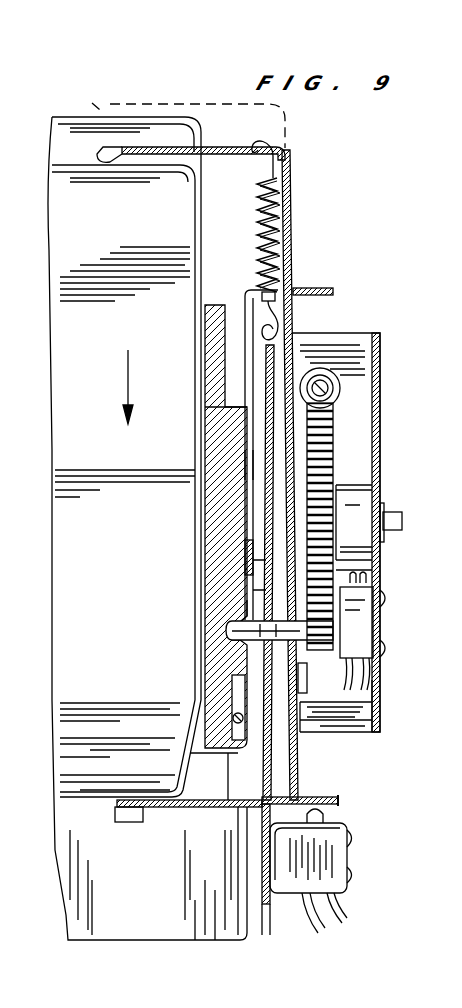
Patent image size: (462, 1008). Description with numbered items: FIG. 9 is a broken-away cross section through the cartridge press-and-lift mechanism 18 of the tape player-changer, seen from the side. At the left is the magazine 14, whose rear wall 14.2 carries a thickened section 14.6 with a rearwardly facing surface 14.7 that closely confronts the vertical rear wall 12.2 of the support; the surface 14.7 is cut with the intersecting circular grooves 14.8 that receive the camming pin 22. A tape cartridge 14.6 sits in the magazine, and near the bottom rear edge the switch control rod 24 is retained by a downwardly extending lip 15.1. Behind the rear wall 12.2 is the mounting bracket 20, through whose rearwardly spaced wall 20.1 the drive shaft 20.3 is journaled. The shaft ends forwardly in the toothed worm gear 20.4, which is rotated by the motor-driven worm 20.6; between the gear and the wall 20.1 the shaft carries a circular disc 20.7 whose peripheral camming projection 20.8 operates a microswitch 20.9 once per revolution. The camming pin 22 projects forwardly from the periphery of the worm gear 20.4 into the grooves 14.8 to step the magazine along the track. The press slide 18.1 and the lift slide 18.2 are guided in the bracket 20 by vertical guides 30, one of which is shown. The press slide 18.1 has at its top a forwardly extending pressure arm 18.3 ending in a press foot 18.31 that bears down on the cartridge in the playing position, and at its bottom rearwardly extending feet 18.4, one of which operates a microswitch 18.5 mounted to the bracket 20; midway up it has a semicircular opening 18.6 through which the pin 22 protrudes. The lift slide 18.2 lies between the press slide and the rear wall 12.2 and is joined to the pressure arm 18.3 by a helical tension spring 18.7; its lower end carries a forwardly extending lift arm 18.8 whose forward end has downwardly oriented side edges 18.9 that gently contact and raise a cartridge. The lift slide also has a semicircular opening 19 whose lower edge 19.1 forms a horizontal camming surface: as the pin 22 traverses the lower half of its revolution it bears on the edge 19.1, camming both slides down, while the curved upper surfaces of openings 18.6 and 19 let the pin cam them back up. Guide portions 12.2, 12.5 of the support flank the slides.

The rear wall 12.2 is at (245, 343).
The guide bracket lower portion 12.5 is at (250, 465).
The magazine 14 is at (227, 632).
The rear wall 14.2 is at (215, 357).
The tape cartridges 14.6 is at (155, 228).
The rearwardly facing surface 14.7 is at (247, 437).
The circular grooves 14.8 is at (217, 605).
The lips 15.1 is at (233, 690).
The mechanism 18 is at (384, 391).
The press slide 18.1 is at (292, 240).
The lift slide 18.2 is at (267, 498).
The pressure arm 18.3 is at (218, 148).
The press foot 18.31 is at (113, 162).
The feet 18.4 is at (340, 800).
The microswitch 18.5 is at (332, 860).
The semicircular opening 18.6 is at (307, 672).
The helical tension spring 18.7 is at (257, 240).
The lift arm 18.8 is at (171, 808).
The side edges 18.9 is at (132, 823).
The semicircular opening 19 is at (270, 573).
The lower edge 19.1 is at (280, 636).
The mounting bracket 20 is at (357, 732).
The rearwardly spaced wall 20.1 is at (382, 692).
The drive shaft 20.3 is at (400, 517).
The worm gear 20.4 is at (320, 470).
The worm 20.6 is at (322, 370).
The circular disc 20.7 is at (347, 542).
The camming projection 20.8 is at (357, 567).
The microswitch 20.9 is at (360, 633).
The camming pin 22 is at (262, 640).
The switch control rod 24 is at (233, 717).
The vertical guides 30 is at (307, 662).